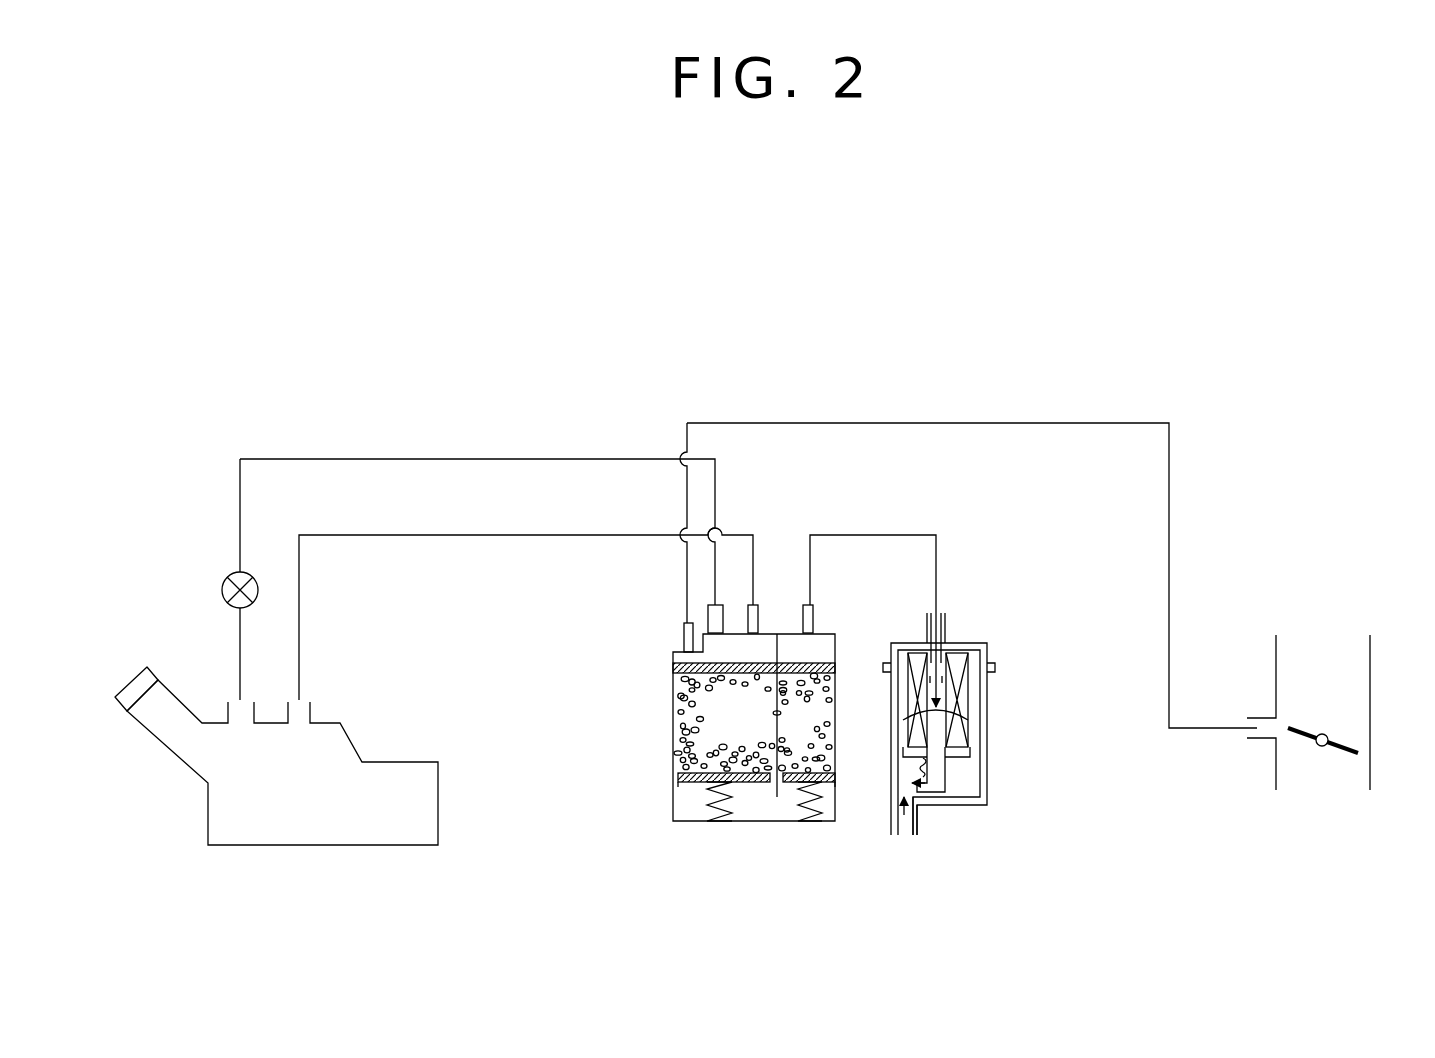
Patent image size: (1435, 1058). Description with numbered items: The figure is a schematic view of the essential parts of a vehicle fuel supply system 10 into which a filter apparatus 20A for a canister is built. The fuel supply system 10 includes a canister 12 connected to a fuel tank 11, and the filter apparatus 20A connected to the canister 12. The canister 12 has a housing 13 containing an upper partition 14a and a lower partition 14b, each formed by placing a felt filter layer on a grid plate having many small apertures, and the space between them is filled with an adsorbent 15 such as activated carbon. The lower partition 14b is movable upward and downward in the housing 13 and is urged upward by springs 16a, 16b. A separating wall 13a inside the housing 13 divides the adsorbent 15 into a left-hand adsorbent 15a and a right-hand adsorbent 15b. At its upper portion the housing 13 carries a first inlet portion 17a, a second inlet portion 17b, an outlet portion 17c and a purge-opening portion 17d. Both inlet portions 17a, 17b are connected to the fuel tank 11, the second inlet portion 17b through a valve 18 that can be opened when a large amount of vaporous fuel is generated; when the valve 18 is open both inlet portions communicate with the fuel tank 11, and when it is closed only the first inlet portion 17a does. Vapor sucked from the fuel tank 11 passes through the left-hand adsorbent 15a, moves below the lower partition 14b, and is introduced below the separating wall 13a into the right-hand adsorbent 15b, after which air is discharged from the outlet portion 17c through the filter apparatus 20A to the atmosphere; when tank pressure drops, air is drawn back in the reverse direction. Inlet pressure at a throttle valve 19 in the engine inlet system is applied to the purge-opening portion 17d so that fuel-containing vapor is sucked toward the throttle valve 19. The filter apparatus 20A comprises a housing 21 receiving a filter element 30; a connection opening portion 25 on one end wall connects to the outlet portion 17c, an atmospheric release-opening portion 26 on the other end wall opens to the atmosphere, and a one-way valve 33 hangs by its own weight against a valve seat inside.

The fuel supply system 10 is at (482, 338).
The fuel tank 11 is at (403, 773).
The canister 12 is at (732, 696).
The housing 13 is at (687, 822).
The separating wall 13a is at (777, 728).
The upper partition 14a is at (672, 665).
The lower partition 14b is at (673, 778).
The adsorbent 15 is at (731, 780).
The left-hand adsorbent 15a is at (672, 748).
The right-hand adsorbent 15b is at (827, 753).
The spring 16a is at (730, 810).
The spring 16b is at (798, 815).
The first inlet portion 17a is at (760, 617).
The second inlet portion 17b is at (725, 618).
The outlet portion 17c is at (813, 620).
The purge-opening portion 17d is at (683, 630).
The valve 18 is at (223, 583).
The throttle valve 19 is at (1347, 742).
The filter apparatus 20A is at (974, 730).
The housing 21 is at (988, 748).
The connection opening portion 25 is at (945, 615).
The atmospheric release-opening portion 26 is at (922, 827).
The filter element 30 is at (972, 703).
The one-way valve 33 is at (920, 785).